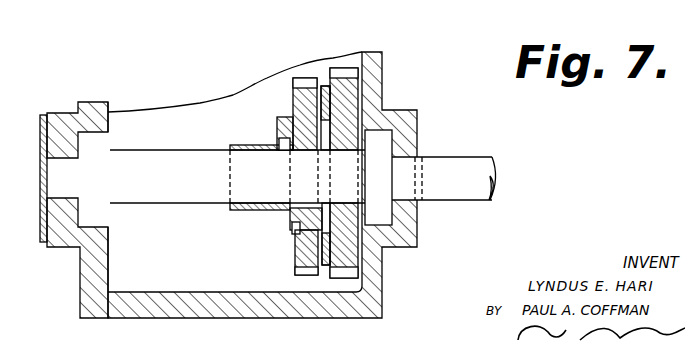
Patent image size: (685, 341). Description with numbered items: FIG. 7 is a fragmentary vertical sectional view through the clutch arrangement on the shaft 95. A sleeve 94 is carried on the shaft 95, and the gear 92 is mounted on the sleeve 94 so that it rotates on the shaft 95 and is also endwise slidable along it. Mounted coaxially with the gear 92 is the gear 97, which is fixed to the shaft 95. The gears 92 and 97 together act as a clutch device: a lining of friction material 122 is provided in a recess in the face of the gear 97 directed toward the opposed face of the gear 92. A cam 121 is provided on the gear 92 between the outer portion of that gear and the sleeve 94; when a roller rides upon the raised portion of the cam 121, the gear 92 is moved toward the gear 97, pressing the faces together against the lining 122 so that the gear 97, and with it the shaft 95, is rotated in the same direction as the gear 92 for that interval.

The gear 92 is at (307, 97).
The sleeve 94 is at (252, 210).
The shaft 95 is at (447, 171).
The gear 97 is at (347, 102).
The cam 121 is at (278, 128).
The lining of friction material 122 is at (321, 94).